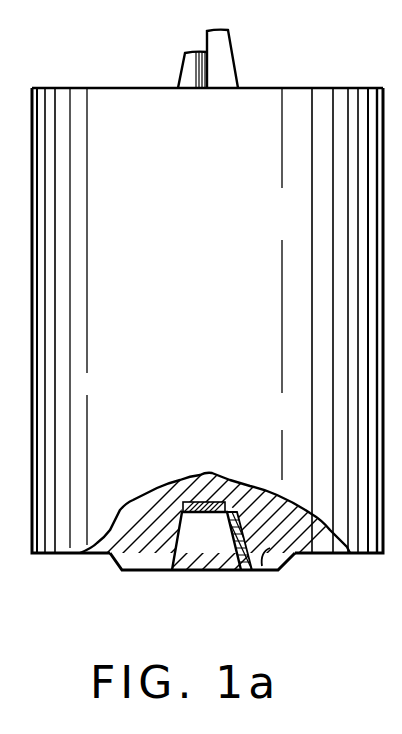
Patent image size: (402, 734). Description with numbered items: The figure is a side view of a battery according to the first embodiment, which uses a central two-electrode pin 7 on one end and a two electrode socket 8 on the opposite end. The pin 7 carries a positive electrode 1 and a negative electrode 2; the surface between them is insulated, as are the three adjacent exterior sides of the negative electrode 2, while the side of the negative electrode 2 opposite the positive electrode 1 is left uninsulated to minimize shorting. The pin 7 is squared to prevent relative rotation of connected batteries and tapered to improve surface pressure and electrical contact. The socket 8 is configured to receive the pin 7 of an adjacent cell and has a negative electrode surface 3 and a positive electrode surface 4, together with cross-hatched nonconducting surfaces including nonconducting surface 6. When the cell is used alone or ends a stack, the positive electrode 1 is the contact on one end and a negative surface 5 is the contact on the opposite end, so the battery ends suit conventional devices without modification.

The positive electrode 1 is at (210, 28).
The negative electrode 2 is at (196, 51).
The negative electrode surface 3 is at (182, 522).
The positive electrode surface 4 is at (234, 524).
The negative surface 5 is at (276, 568).
The nonconducting surface 6 is at (278, 545).
The central two-electrode pin 7 is at (225, 53).
The two electrode socket 8 is at (225, 598).